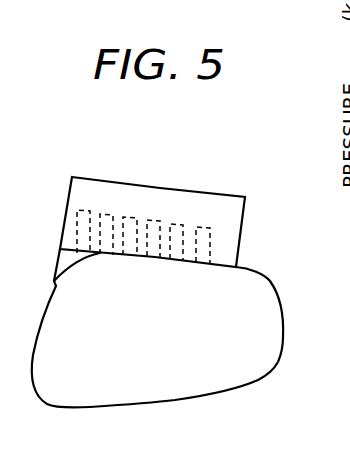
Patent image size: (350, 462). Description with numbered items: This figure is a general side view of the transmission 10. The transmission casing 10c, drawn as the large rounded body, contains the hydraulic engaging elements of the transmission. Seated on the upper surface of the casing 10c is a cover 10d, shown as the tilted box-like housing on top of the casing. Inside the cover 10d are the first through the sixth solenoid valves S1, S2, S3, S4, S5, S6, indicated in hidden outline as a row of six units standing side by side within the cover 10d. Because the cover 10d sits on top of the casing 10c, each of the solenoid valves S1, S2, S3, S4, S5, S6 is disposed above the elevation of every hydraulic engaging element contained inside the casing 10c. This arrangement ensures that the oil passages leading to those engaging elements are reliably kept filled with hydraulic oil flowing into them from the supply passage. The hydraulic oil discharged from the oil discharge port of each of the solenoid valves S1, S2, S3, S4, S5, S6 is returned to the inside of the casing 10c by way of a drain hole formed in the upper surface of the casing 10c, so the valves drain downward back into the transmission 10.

The transmission 10 is at (258, 270).
The transmission casing 10c is at (288, 292).
The cover 10d is at (190, 183).
The first solenoid valve S1 is at (88, 210).
The second solenoid valve S2 is at (115, 213).
The third solenoid valve S3 is at (141, 213).
The fourth solenoid valve S4 is at (153, 257).
The fifth solenoid valve S5 is at (187, 226).
The sixth solenoid valve S6 is at (217, 230).